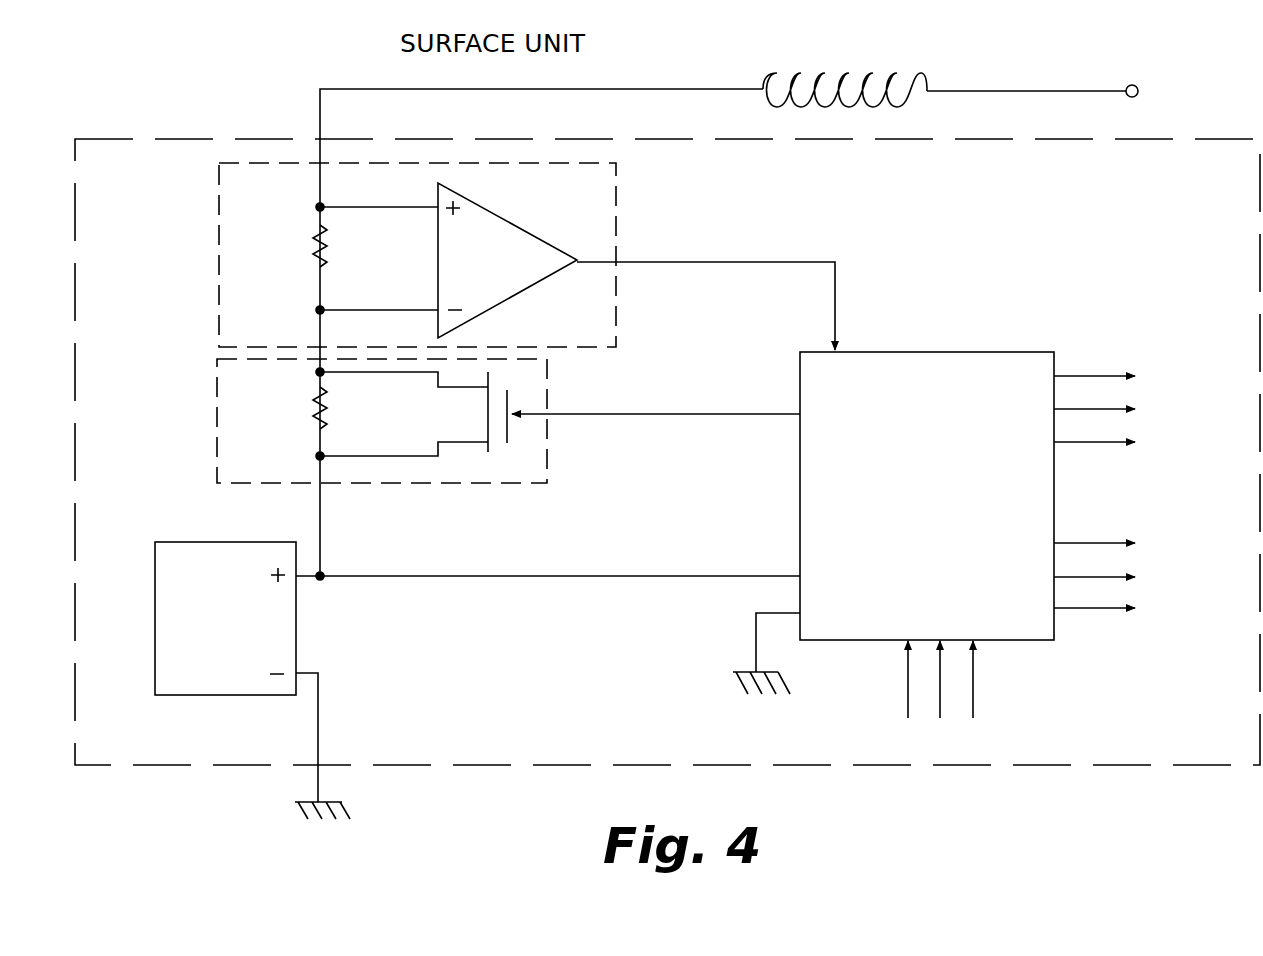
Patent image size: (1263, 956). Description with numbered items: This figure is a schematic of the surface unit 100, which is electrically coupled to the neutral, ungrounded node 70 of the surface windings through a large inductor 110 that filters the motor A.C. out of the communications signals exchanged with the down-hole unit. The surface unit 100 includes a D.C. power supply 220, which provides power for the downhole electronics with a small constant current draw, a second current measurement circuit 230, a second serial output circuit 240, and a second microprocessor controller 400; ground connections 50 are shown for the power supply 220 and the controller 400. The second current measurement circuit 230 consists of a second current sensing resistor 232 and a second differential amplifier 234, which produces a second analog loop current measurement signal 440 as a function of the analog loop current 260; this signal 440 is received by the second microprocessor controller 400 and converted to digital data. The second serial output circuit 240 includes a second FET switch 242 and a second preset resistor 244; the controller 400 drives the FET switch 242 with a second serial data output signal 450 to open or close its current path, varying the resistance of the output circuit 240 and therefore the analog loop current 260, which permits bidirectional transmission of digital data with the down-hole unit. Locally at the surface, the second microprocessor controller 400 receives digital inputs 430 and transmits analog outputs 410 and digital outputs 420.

The surface unit 100 is at (1112, 766).
The large inductor 110 is at (857, 80).
The neutral node 70 is at (1133, 84).
The analog loop current 260 is at (620, 72).
The second current measurement circuit 230 is at (218, 280).
The second current sensing resistor 232 is at (318, 239).
The second current measurement signal generator 234 is at (448, 260).
The second serial output circuit 240 is at (217, 422).
The second switch assembly 242 is at (413, 414).
The second preset resistor 244 is at (314, 413).
The D.C. power supply 220 is at (477, 672).
The ground 50 is at (348, 814).
The second microprocessor controller 400 is at (927, 496).
The analog outputs 410 is at (1129, 409).
The digital outputs 420 is at (1129, 575).
The digital inputs 430 is at (940, 694).
The second analog loop current measurement signal 440 is at (725, 262).
The second serial data output signal 450 is at (660, 415).